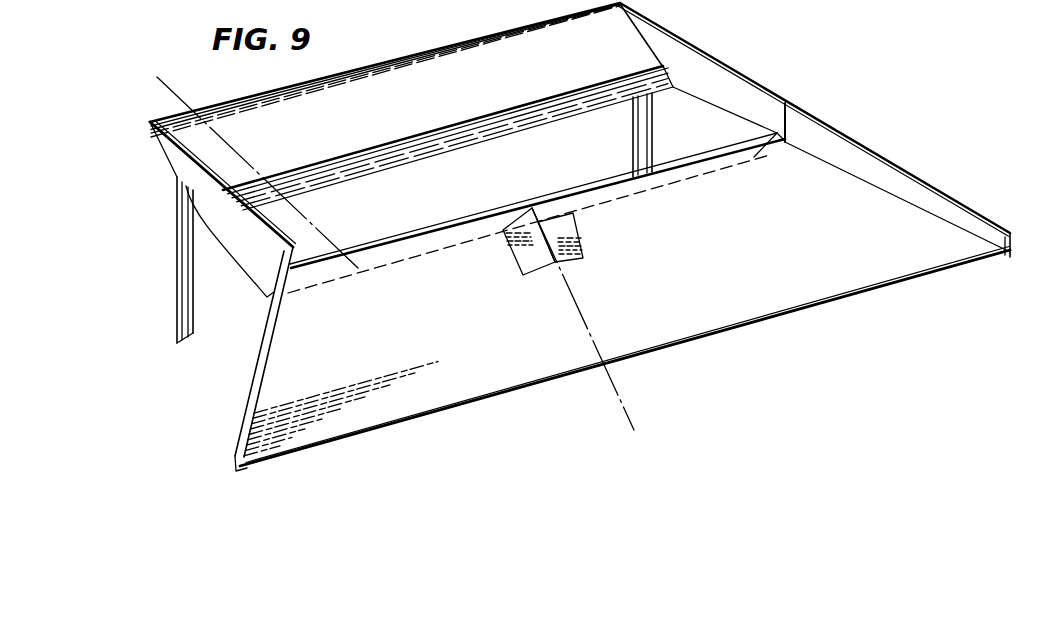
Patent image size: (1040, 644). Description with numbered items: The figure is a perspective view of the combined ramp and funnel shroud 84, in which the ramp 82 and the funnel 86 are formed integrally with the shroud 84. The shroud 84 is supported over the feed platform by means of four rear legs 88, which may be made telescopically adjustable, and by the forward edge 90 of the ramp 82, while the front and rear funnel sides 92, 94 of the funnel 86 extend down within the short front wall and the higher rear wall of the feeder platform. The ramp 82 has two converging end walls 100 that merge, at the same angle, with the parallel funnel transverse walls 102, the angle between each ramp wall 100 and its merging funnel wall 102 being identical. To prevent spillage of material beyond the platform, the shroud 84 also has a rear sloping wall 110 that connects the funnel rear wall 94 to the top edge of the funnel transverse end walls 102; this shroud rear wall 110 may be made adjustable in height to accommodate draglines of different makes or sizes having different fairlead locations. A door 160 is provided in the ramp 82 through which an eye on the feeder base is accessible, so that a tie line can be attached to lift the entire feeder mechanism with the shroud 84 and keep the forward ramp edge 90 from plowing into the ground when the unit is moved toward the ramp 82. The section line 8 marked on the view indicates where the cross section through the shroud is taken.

The section line 8- 8 is at (192, 81).
The ramp 82 is at (785, 280).
The shroud 84 is at (143, 152).
The funnel 86 is at (474, 33).
The rear legs 88 is at (635, 134).
The forward edge 90 is at (633, 360).
The front funnel side 92 is at (629, 185).
The rear funnel side 94 is at (340, 163).
The converging end walls 100 is at (863, 147).
The funnel transverse walls 102 is at (717, 60).
The rear sloping wall 110 is at (400, 85).
The door 160 is at (583, 237).